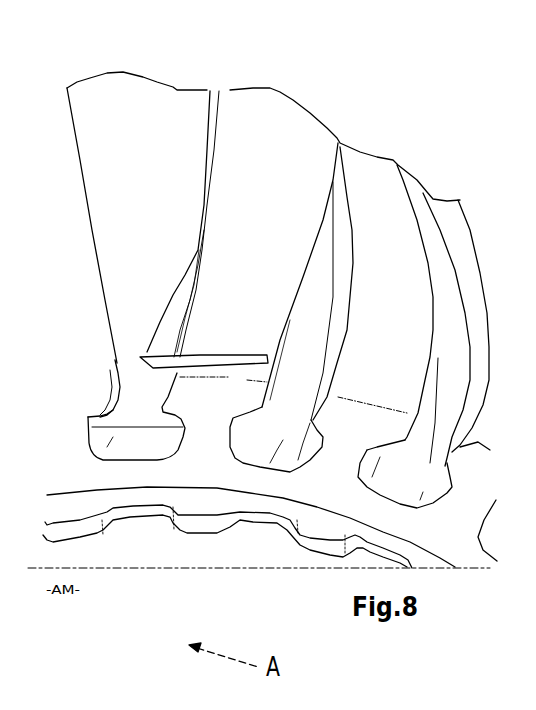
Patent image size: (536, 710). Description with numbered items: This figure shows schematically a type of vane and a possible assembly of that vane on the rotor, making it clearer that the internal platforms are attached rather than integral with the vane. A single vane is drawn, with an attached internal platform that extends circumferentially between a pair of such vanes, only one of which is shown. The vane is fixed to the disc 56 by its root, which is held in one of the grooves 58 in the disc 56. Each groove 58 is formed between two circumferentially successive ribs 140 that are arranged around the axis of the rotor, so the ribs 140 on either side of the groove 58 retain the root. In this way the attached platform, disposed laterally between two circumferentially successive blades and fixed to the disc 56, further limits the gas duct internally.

The groove 58 is at (133, 443).
The rib 140 is at (192, 400).
The disc 56 is at (455, 551).